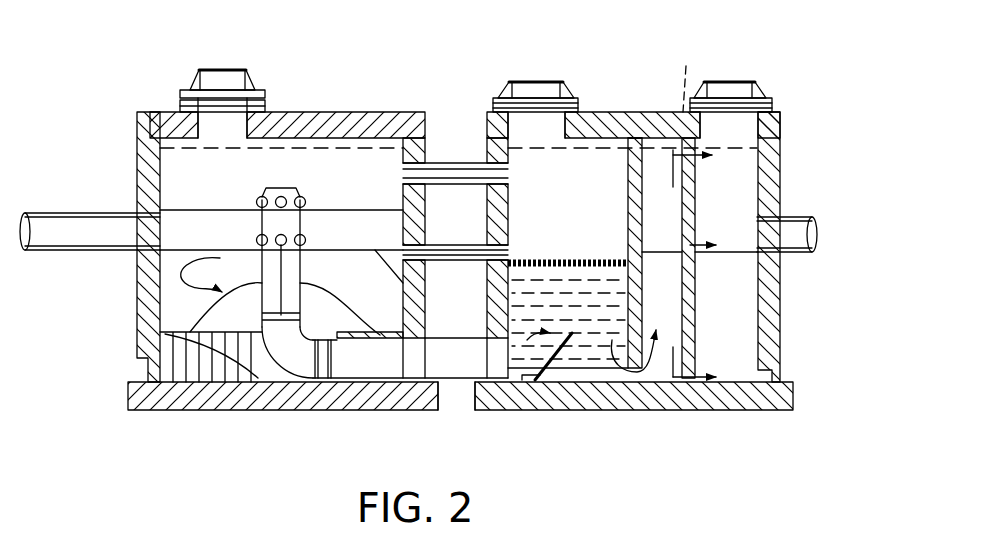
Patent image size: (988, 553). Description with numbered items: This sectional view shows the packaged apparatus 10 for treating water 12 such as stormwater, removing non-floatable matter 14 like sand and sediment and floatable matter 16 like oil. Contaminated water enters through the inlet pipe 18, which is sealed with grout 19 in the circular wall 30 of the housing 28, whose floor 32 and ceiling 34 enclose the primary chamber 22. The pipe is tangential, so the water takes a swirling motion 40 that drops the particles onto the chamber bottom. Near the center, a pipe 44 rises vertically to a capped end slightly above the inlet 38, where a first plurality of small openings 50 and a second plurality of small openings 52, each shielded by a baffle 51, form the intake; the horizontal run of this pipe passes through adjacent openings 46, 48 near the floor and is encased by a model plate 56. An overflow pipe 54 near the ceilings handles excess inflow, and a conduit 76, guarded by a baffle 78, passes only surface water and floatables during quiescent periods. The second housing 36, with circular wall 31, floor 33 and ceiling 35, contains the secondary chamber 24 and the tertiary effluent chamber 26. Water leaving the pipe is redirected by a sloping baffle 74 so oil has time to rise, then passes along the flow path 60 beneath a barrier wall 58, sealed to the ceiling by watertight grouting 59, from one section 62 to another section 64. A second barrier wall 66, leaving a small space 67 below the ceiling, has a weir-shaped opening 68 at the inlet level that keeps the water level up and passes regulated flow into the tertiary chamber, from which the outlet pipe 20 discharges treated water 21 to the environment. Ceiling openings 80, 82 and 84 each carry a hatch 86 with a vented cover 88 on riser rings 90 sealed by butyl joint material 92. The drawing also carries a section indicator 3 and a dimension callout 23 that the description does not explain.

The packaged apparatus for treating water 10 is at (822, 86).
The water 12 is at (572, 280).
The non-floatable matter 14 is at (355, 310).
The floatable matter 16 is at (545, 258).
The inlet pipe 18 is at (55, 252).
The grout 19 is at (165, 208).
The outlet pipe 20 is at (814, 228).
The discharge of treated water 21 is at (805, 243).
The primary chamber 22 is at (172, 187).
The wall thickness 23 is at (448, 161).
The secondary chamber 24 is at (587, 366).
The tertiary effluent chamber 26 is at (712, 362).
The housing 28 is at (412, 113).
The circular wall 30 is at (137, 160).
The circular wall 31 is at (780, 180).
The floor 32 is at (362, 400).
The floor 33 is at (648, 405).
The ceiling 34 is at (340, 112).
The ceiling 35 is at (592, 112).
The housing 36 is at (618, 112).
The inlet 38 is at (150, 215).
The swirling motion 40 is at (203, 275).
The pipe 44 is at (398, 368).
The opening 46 is at (392, 358).
The opening 48 is at (470, 376).
The first plurality of small openings 50 is at (258, 240).
The baffle 51 is at (303, 200).
The second plurality of small openings 52 is at (262, 200).
The overflow pipe 54 is at (498, 205).
The model plate 56 is at (168, 358).
The barrier wall 58 is at (642, 300).
The watertight grouting 59 is at (636, 138).
The flow path 60 is at (612, 345).
The section 62 is at (593, 197).
The section 64 is at (650, 222).
The barrier wall 66 is at (695, 185).
The space 67 is at (683, 75).
The opening 68 is at (696, 230).
The baffle 74 is at (538, 385).
The conduit 76 is at (448, 186).
The baffle 78 is at (378, 248).
The opening 80 is at (245, 128).
The vent opening 82 is at (522, 137).
The vent opening 84 is at (748, 138).
The hatch 86 is at (222, 122).
The vented cover 88 is at (212, 72).
The riser rings 90 is at (248, 92).
The butyl joint material 92 is at (266, 102).
The section line 3- 3 is at (684, 263).